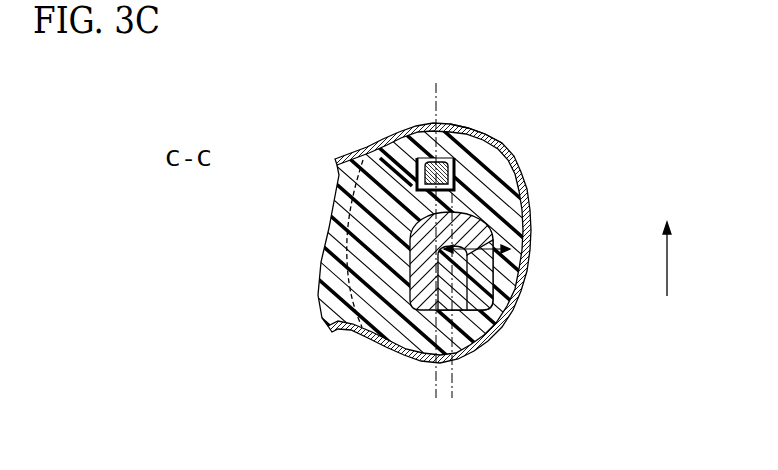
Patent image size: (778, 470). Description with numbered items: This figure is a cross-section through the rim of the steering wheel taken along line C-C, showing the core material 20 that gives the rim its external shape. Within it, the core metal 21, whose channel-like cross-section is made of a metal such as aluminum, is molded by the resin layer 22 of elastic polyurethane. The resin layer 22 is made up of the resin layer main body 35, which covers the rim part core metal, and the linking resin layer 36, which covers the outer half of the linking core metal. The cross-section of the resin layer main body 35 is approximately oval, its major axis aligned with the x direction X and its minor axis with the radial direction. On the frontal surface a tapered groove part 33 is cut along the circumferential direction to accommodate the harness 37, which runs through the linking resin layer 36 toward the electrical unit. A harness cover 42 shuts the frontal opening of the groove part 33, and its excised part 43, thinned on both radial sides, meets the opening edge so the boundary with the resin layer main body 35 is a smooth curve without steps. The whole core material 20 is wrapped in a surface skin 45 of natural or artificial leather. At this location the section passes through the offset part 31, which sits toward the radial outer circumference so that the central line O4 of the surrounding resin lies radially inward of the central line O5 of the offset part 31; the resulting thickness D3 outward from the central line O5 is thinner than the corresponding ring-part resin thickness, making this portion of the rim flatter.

The core material 20 is at (481, 243).
The core metal 21 is at (490, 211).
The resin layer 22 is at (590, 233).
The offset part 31 is at (500, 307).
The groove part 33 is at (401, 148).
The resin layer main body 35 is at (502, 291).
The linking resin layer 36 is at (337, 202).
The harness 37 is at (463, 133).
The harness cover 42 is at (421, 155).
The excised part 43 is at (408, 160).
The surface skin 45 is at (443, 162).
The central line of the offset part resin layer O4 is at (440, 85).
The central line of the offset part O5 is at (453, 380).
The thickness of the offset part resin layer D3 is at (507, 264).
The x direction X is at (667, 242).